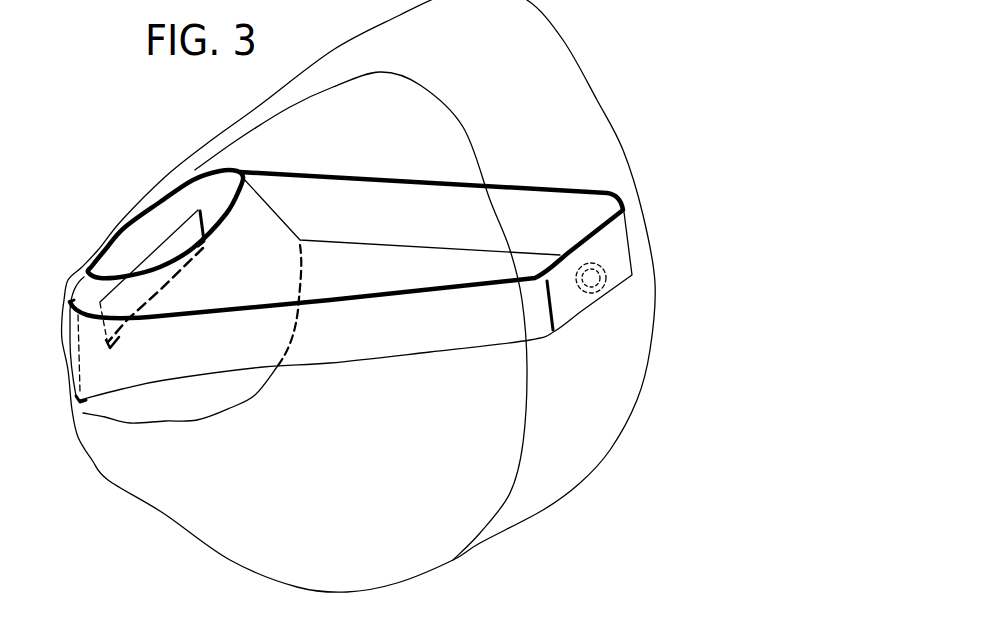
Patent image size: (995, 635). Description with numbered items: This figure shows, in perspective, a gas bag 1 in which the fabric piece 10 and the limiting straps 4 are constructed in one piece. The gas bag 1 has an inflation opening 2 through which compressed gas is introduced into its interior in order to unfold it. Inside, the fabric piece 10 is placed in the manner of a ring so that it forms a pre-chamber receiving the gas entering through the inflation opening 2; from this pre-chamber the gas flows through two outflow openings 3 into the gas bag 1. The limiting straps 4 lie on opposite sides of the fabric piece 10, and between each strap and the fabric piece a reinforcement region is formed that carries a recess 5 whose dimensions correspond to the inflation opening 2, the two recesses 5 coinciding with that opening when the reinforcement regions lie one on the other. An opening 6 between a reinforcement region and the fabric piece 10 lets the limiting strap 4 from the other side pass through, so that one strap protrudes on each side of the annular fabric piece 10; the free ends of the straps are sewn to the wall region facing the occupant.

The gas bag 1 is at (188, 494).
The inflation opening 2 is at (151, 262).
The outflow openings 3 is at (133, 419).
The limiting strap 4 is at (366, 201).
The recess 5 is at (188, 212).
The opening 6 is at (73, 303).
The fabric piece 10 is at (99, 401).